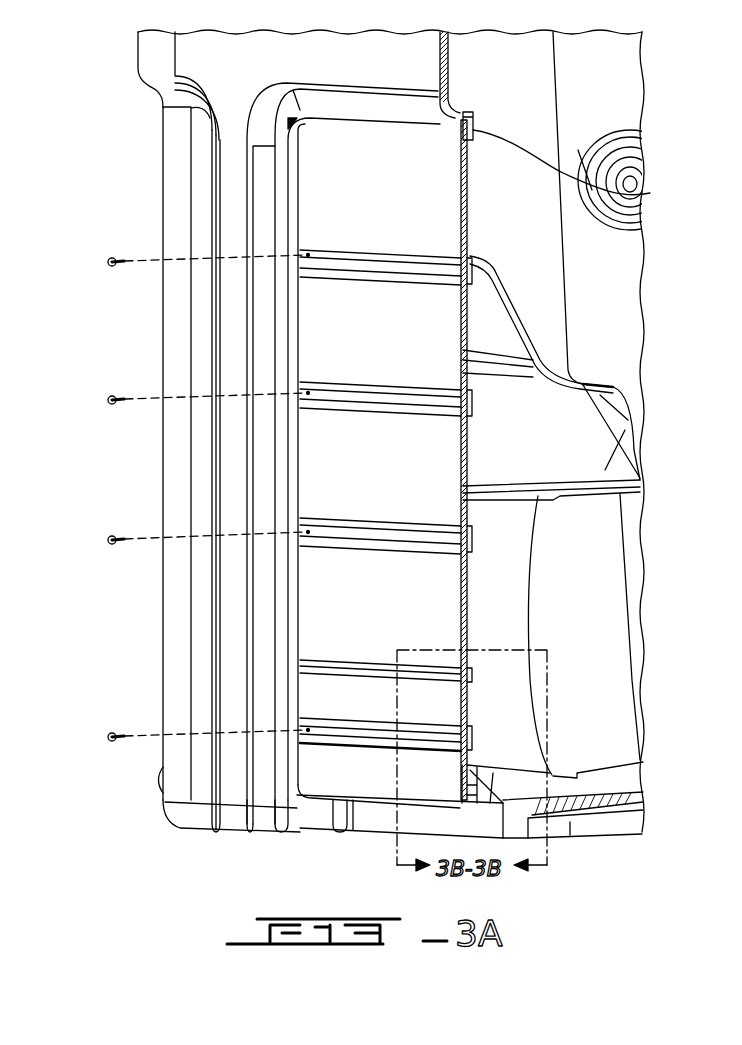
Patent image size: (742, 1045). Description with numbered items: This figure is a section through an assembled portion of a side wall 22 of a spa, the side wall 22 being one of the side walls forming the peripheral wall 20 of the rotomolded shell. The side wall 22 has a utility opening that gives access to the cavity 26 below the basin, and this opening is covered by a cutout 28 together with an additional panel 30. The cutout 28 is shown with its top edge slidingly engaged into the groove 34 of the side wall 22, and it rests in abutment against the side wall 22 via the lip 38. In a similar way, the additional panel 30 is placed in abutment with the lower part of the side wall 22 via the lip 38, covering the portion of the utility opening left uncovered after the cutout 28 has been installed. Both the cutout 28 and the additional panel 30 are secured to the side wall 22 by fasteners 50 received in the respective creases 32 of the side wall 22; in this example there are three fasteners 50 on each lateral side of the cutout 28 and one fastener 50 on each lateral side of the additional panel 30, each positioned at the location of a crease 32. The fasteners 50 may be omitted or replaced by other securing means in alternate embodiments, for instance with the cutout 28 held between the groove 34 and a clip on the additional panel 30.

The peripheral wall 20 is at (263, 780).
The side wall 22 is at (208, 68).
The cavity 26 is at (507, 570).
The cutout 28 is at (330, 182).
The additional panel 30 is at (357, 783).
The crease 32 is at (357, 405).
The groove 34 is at (462, 112).
The lip 38 is at (640, 194).
The fastener 50 is at (115, 267).